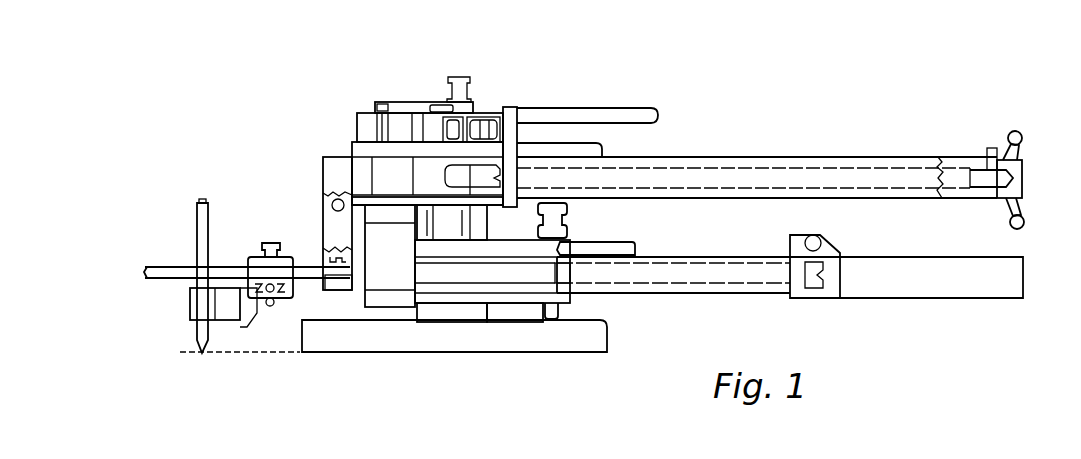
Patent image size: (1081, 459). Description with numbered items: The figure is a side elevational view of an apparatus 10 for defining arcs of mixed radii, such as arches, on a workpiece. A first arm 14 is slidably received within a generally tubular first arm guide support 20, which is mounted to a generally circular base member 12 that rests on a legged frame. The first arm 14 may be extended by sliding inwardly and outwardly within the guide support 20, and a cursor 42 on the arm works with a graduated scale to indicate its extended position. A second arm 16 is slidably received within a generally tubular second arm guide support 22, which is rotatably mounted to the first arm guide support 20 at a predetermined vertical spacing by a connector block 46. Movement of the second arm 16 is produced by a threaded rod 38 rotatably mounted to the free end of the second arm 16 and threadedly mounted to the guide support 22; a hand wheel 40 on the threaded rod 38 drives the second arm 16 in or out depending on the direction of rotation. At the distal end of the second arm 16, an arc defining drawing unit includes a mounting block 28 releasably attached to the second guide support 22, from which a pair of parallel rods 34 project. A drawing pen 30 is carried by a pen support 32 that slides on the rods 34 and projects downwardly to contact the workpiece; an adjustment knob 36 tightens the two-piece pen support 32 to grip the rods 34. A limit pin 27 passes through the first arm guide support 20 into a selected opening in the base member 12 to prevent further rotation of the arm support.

The apparatus for defining arcs 10 is at (276, 140).
The base member 12 is at (327, 338).
The first arm 14 is at (650, 275).
The second arm 16 is at (738, 175).
The first arm guide support 20 is at (477, 278).
The second arm guide support 22 is at (433, 175).
The limit pin 27 is at (550, 317).
The mounting block 28 is at (328, 225).
The drawing pen 30 is at (200, 233).
The pen support 32 is at (258, 262).
The rods 34 is at (165, 270).
The adjustment knob 36 is at (266, 243).
The threaded rod 38 is at (978, 170).
The hand wheel 40 is at (1016, 131).
The cursor 42 is at (828, 292).
The connector block 46 is at (393, 275).